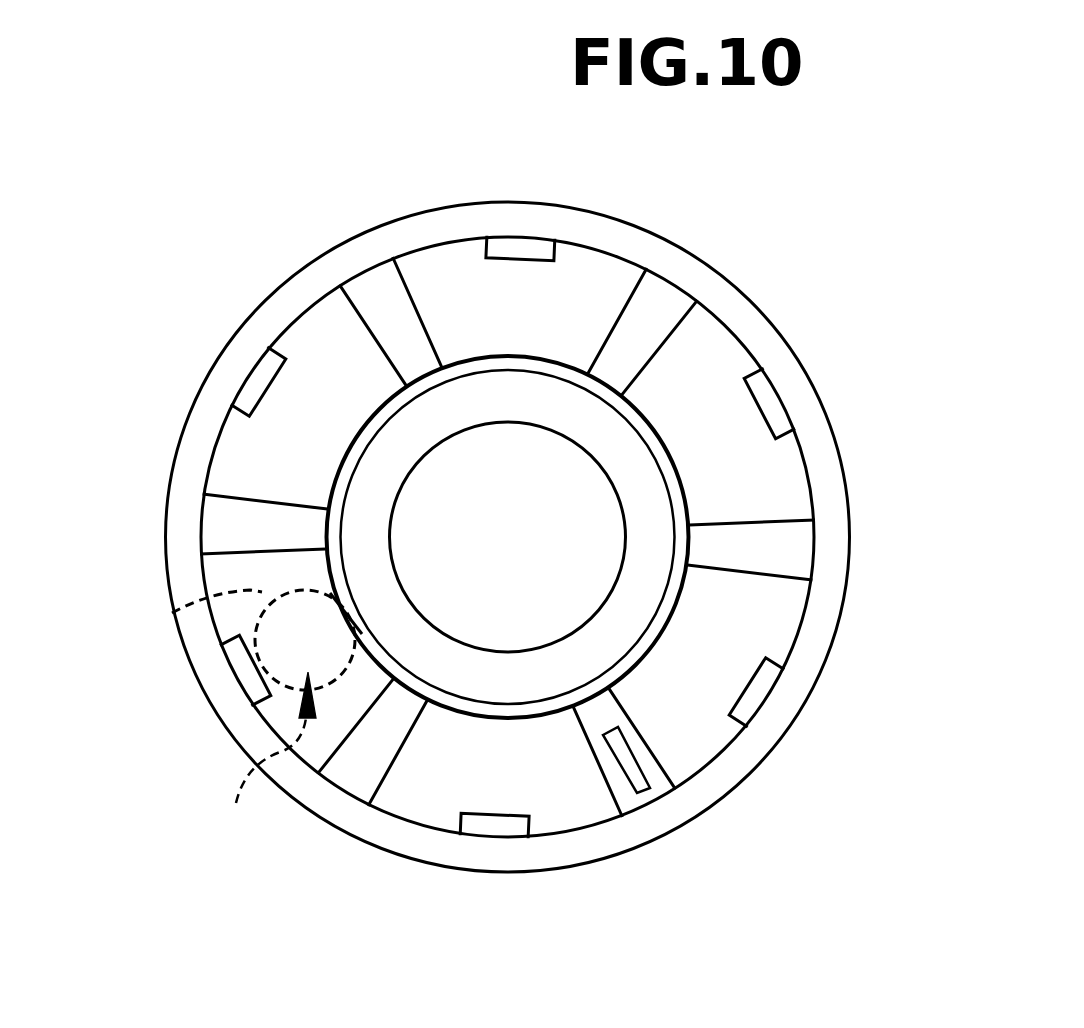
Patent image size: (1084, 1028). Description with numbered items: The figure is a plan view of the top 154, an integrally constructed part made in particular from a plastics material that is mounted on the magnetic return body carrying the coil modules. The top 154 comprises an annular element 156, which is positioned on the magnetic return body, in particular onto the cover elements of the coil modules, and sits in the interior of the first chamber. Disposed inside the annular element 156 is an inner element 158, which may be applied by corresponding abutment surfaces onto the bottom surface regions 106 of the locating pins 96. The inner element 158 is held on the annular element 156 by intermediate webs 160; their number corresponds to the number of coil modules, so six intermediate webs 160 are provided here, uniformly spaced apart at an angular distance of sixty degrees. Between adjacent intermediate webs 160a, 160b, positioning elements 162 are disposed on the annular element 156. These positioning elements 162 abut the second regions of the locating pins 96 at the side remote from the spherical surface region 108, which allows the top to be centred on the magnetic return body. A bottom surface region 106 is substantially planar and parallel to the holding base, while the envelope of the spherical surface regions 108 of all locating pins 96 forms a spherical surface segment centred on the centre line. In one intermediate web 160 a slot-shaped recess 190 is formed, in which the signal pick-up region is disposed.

The locating pin 96 is at (236, 803).
The bottom surface region 106 is at (305, 585).
The spherical surface region 108 is at (172, 613).
The top 154 is at (648, 849).
The annular element 156 is at (823, 619).
The inner element 158 is at (520, 675).
The intermediate web 160 is at (370, 290).
The intermediate web 160a is at (222, 518).
The intermediate web 160b is at (353, 775).
The positioning element 162 is at (233, 663).
The slot-shaped recess 190 is at (633, 773).